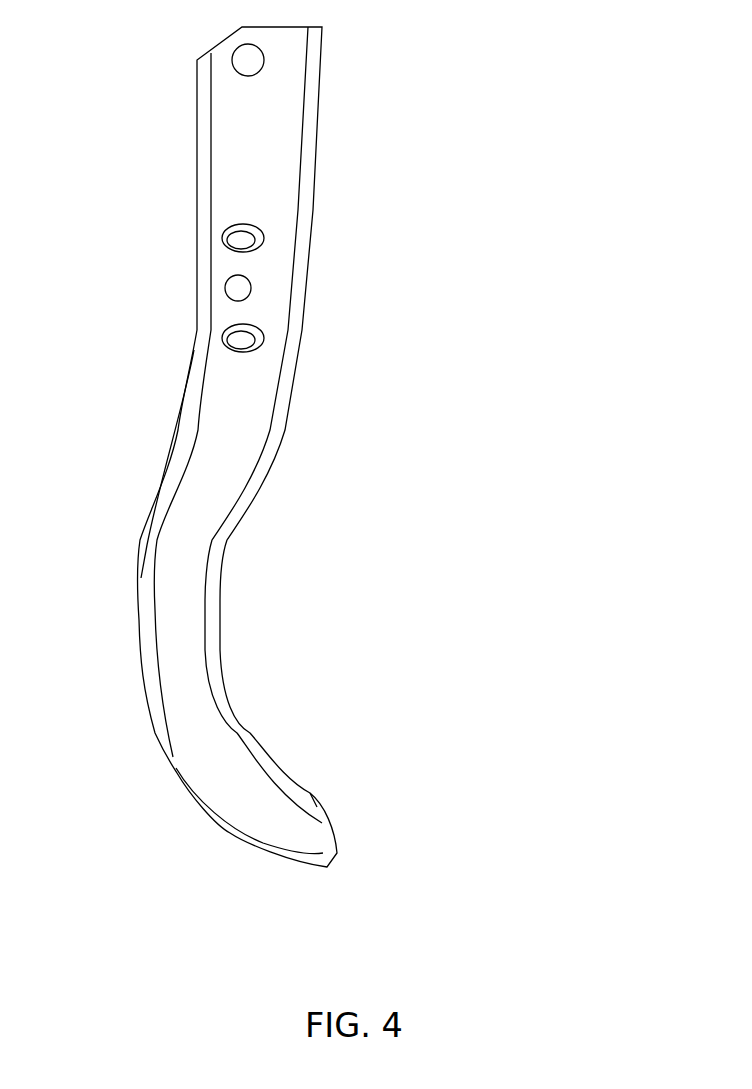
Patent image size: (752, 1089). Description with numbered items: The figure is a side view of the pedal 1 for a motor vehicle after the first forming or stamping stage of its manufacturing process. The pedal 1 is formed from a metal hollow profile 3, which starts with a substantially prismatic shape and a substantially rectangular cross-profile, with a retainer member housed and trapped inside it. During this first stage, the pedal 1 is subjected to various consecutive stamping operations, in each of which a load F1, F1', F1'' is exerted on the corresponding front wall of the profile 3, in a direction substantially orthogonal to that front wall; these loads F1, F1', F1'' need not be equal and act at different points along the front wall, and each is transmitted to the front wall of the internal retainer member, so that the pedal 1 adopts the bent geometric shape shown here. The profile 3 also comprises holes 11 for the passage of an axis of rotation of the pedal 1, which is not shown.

The pedal 1 is at (371, 444).
The hollow profile 3 is at (248, 173).
The holes 11 is at (252, 67).
The load F1 is at (113, 435).
The load F1' is at (289, 601).
The load F1'' is at (104, 778).